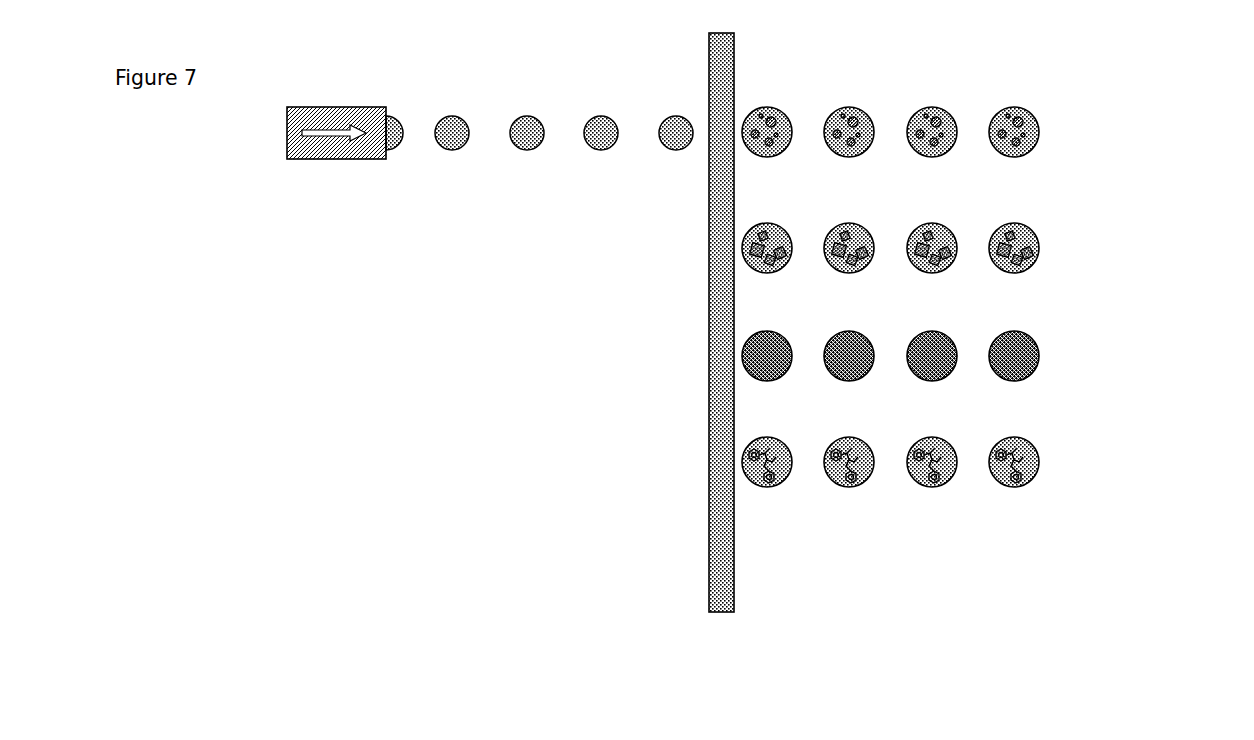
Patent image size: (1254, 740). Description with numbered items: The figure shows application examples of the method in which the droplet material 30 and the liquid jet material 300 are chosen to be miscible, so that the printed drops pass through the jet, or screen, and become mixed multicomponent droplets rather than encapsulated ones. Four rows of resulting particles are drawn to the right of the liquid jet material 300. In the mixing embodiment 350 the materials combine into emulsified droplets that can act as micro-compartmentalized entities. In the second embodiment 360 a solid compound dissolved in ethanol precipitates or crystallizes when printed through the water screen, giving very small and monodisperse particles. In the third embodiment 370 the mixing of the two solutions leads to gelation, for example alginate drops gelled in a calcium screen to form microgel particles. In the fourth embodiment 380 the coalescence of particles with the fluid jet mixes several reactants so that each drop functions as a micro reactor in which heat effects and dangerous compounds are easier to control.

The droplet material 30 is at (450, 133).
The liquid jet material 300 is at (722, 241).
The mixing embodiment 350 is at (1043, 117).
The second embodiment 360 is at (1048, 237).
The third embodiment 370 is at (1053, 343).
The fourth embodiment 380 is at (1058, 450).